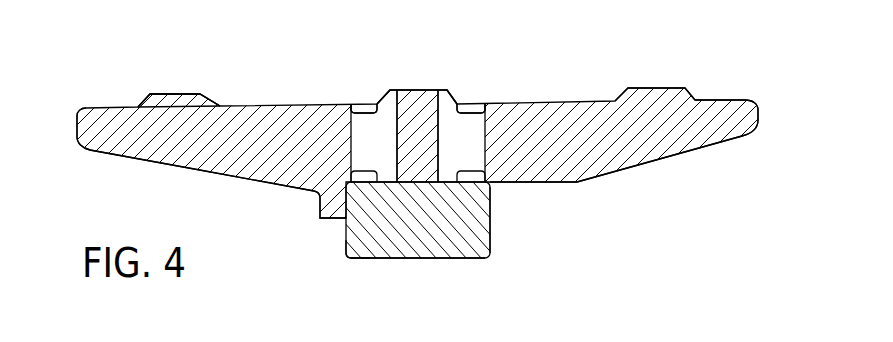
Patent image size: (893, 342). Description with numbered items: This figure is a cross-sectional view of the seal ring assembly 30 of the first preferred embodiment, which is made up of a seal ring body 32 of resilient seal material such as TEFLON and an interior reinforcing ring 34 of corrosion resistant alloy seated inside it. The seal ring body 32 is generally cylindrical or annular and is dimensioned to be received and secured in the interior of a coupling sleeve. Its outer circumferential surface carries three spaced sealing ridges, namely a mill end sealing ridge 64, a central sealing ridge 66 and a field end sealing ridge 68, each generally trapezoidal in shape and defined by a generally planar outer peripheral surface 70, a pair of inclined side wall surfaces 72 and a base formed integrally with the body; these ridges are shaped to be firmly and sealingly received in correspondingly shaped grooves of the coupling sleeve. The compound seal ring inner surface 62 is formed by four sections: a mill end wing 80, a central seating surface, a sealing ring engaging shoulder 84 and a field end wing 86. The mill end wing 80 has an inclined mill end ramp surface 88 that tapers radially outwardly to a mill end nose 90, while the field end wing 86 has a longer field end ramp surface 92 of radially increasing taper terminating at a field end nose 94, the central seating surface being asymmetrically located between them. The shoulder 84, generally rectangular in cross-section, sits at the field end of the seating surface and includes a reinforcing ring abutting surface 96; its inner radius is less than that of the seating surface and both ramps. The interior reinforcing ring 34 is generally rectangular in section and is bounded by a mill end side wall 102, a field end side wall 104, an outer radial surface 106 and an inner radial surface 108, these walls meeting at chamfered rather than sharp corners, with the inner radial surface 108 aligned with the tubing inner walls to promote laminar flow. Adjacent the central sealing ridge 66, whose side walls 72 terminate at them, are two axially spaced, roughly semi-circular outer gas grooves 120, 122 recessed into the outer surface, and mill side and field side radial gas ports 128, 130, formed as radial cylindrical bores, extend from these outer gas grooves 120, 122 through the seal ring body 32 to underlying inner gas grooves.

The seal ring assembly 30 is at (541, 72).
The seal ring body 32 is at (569, 84).
The interior reinforcing ring 34 is at (504, 259).
The compound seal ring inner surface 62 is at (585, 194).
The mill end sealing ridge 64 is at (664, 76).
The central sealing ridge 66 is at (419, 74).
The field end sealing ridge 68 is at (176, 82).
The outer peripheral surface 70 is at (200, 93).
The inclined side wall surfaces 72 is at (141, 100).
The mill end wing 80 is at (757, 112).
The sealing ring engaging shoulder 84 is at (318, 226).
The field end wing 86 is at (102, 141).
The mill end ramp surface 88 is at (683, 152).
The mill end nose 90 is at (760, 119).
The field end ramp surface 92 is at (148, 160).
The field end nose 94 is at (77, 125).
The reinforcing ring abutting surface 96 is at (315, 194).
The mill end side wall 102 is at (492, 228).
The field end side wall 104 is at (344, 246).
The outer radial surface 106 is at (450, 181).
The inner radial surface 108 is at (413, 259).
The outer gas groove 120 is at (470, 102).
The outer gas groove 122 is at (362, 103).
The mill side radial gas port 128 is at (446, 152).
The field side radial gas port 130 is at (355, 152).